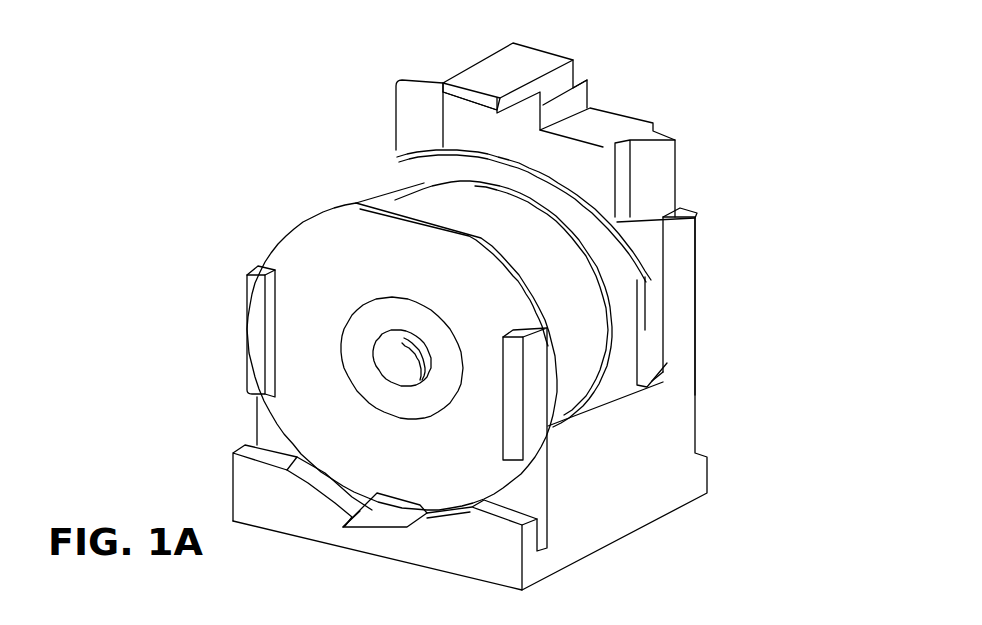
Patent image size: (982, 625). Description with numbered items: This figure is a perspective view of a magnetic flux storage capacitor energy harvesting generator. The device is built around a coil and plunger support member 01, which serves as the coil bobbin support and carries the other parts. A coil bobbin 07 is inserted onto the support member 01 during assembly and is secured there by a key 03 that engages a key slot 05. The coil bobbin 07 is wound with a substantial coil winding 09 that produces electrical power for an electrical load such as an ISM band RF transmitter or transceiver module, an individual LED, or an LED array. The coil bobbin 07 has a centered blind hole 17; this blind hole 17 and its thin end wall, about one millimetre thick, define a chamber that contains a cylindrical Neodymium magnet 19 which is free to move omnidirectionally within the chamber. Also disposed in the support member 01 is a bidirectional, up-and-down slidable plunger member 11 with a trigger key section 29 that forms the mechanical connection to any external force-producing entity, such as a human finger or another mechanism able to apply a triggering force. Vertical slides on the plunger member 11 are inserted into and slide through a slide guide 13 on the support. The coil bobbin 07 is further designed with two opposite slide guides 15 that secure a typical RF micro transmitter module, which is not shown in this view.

The coil and plunger support member 01 is at (637, 438).
The key 03 is at (397, 517).
The key slot 05 is at (413, 547).
The coil bobbin 07 is at (327, 245).
The coil winding 09 is at (427, 193).
The slidable plunger member 11 is at (597, 122).
The slide guide 13 is at (688, 217).
The slide guides 15 is at (257, 318).
The blind hole 17 is at (375, 363).
The cylindrical Neodymium magnet 19 is at (403, 348).
The trigger key section 29 is at (507, 62).